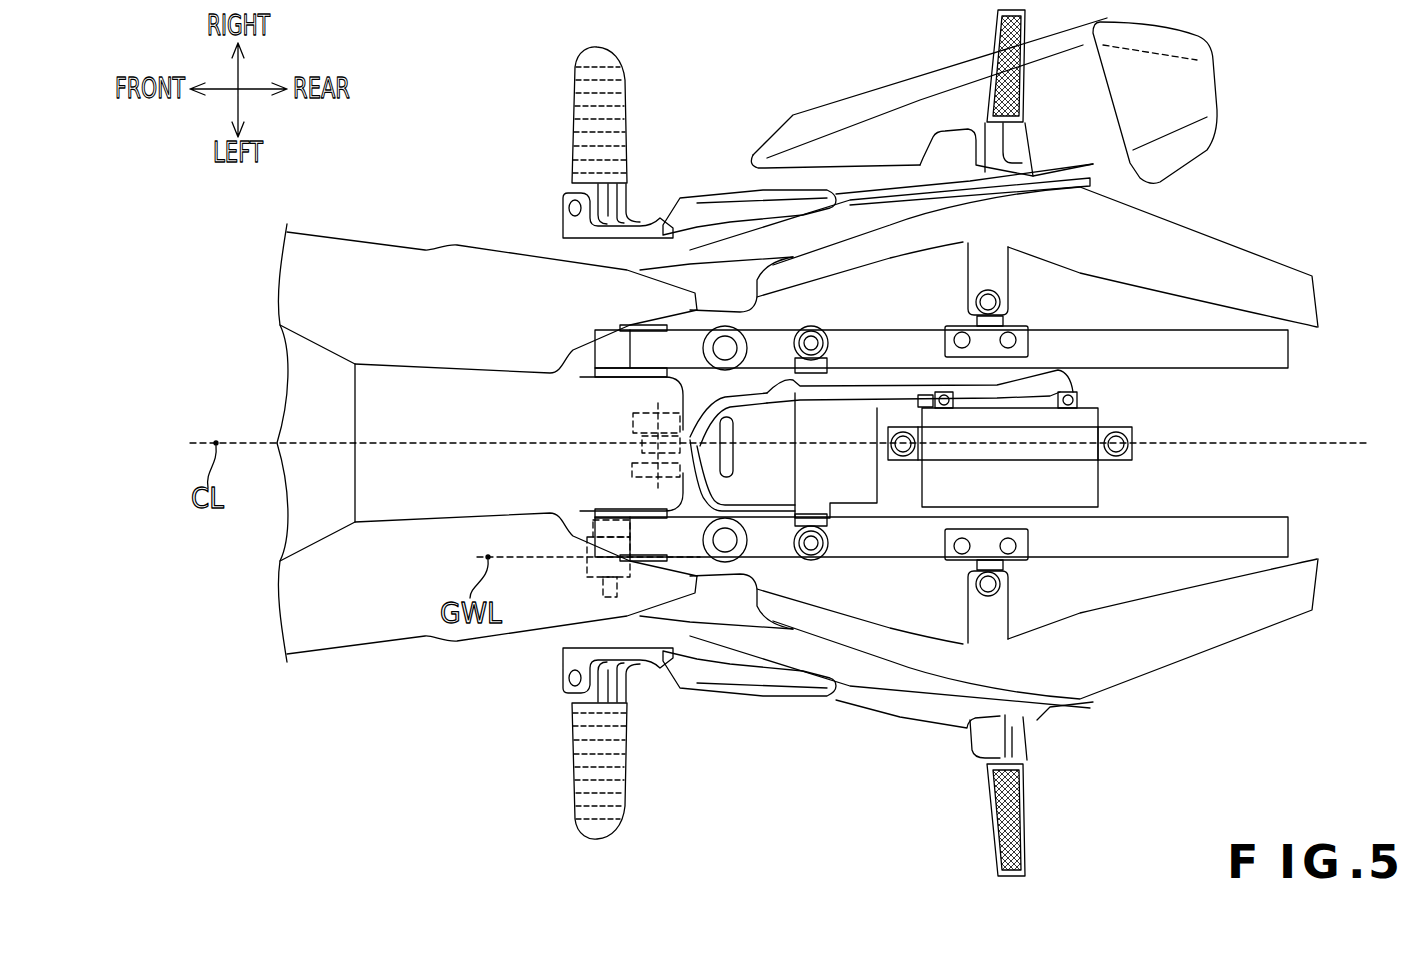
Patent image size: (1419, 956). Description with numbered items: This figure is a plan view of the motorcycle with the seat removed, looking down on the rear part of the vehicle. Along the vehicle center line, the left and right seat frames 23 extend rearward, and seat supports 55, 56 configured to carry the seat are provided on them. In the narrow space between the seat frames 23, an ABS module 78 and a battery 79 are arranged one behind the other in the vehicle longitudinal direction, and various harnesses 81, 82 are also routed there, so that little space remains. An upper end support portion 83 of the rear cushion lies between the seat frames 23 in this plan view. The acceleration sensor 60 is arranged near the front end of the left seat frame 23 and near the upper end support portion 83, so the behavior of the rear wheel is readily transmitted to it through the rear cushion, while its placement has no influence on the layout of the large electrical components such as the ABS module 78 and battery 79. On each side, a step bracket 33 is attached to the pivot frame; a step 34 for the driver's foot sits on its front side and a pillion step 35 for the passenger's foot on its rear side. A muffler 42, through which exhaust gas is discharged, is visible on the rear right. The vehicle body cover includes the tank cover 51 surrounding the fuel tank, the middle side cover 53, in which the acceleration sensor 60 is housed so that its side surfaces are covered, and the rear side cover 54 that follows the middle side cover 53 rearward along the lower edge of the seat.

The seat frame 23 is at (1203, 358).
The step bracket 33 is at (733, 203).
The step 34 is at (580, 108).
The pillion step 35 is at (993, 31).
The muffler 42 is at (762, 176).
The tank cover 51 is at (413, 272).
The middle side cover 53 is at (720, 260).
The rear side cover 54 is at (1187, 250).
The seat support 55 is at (703, 348).
The seat support 56 is at (1002, 334).
The acceleration sensor 60 is at (597, 578).
The ABS module 78 is at (858, 490).
The battery 79 is at (1083, 482).
The harness 81 is at (905, 378).
The harness 82 is at (750, 400).
The upper end support portion 83 is at (614, 469).